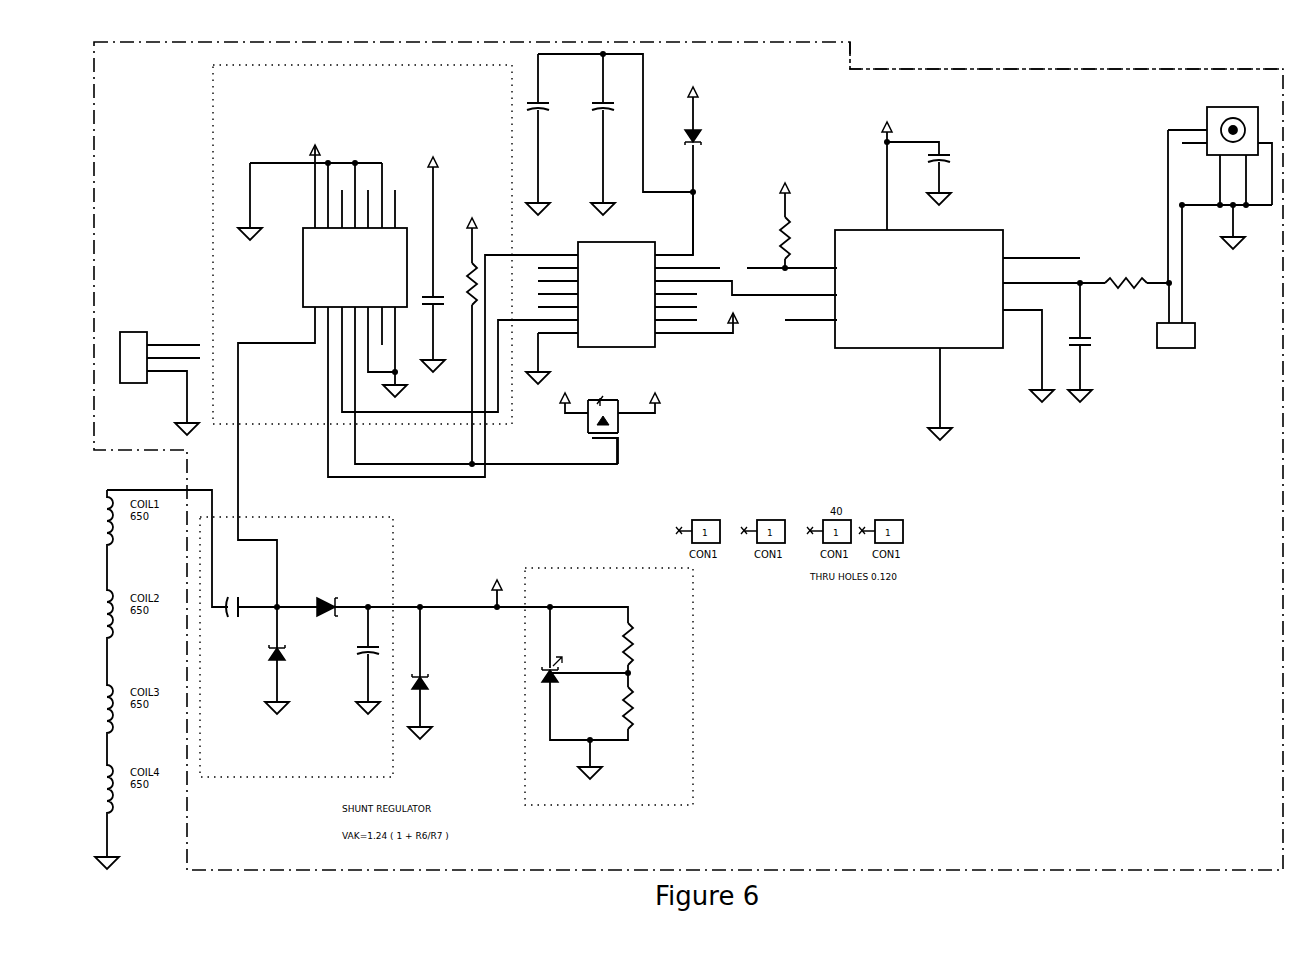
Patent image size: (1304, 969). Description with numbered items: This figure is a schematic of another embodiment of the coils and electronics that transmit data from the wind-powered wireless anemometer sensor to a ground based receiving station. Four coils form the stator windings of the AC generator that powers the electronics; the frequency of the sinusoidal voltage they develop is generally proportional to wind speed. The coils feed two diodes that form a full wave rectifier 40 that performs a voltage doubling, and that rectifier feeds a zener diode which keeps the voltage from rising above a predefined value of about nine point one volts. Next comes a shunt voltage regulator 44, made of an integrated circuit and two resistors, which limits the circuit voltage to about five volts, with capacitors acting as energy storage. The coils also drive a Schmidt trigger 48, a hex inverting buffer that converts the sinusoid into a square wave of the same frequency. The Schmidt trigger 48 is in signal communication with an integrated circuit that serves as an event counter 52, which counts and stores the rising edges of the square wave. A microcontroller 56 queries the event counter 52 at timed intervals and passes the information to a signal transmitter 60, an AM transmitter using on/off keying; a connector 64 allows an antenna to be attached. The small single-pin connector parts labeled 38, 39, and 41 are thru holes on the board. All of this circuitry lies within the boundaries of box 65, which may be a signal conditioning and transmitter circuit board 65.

The thru hole connector CON1 38 is at (698, 533).
The thru hole connector CON1 39 is at (763, 533).
The full wave rectifier 40 is at (388, 532).
The thru hole connector CON1 41 is at (881, 533).
The shunt voltage regulator 44 is at (687, 637).
The Schmidt trigger 48 is at (213, 101).
The event counter 52 is at (643, 347).
The microcontroller 56 is at (845, 350).
The signal transmitter 60 is at (1178, 348).
The connector 64 is at (1218, 102).
The signal conditioning and transmitter circuit board 65 is at (943, 62).